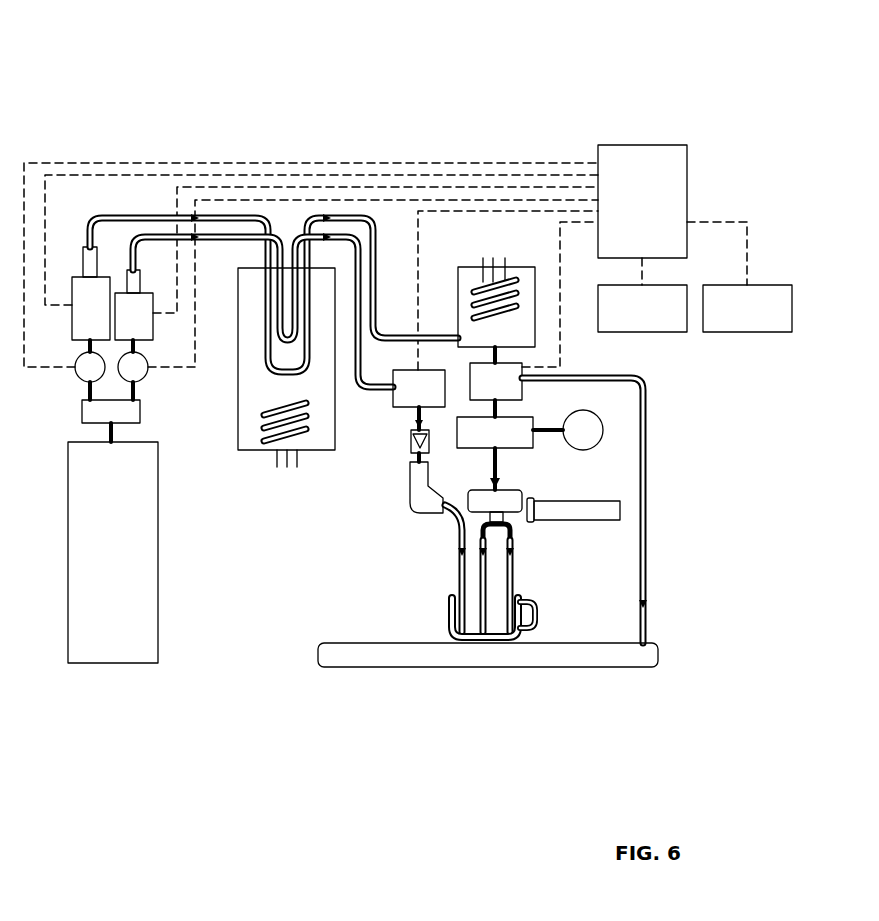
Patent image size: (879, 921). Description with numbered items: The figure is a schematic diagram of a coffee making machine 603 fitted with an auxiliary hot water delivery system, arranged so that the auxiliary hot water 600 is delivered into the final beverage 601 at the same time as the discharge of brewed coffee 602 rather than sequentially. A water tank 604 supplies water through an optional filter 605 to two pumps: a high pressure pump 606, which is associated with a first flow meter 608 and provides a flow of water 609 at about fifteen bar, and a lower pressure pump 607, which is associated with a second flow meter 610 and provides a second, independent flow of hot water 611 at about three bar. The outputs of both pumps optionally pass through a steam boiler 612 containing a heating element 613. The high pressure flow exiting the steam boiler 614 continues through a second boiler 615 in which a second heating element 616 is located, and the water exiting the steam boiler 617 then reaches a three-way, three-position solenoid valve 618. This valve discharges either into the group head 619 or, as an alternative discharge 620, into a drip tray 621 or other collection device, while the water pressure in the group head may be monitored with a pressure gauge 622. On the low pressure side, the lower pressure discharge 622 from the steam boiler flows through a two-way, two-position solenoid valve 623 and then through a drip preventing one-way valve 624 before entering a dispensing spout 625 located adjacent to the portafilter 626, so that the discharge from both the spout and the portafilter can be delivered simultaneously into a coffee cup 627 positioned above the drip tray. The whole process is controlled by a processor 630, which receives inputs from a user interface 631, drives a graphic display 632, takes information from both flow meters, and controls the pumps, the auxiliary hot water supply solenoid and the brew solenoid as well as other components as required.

The auxiliary hot water 600 is at (458, 532).
The final beverage 601 is at (448, 605).
The brewed coffee 602 is at (508, 573).
The coffee making machine 603 is at (632, 80).
The water tank 604 is at (145, 538).
The filter 605 is at (130, 413).
The high pressure pump 606 is at (80, 293).
The lower pressure pump 607 is at (138, 303).
The first flow meter 608 is at (88, 369).
The flow of water 609 is at (130, 215).
The second flow meter 610 is at (143, 370).
The second flow of hot water 611 is at (250, 233).
The steam boiler 612 is at (337, 415).
The heating element 613 is at (310, 440).
The high pressure flow exiting the steam boiler 614 is at (378, 250).
The second boiler 615 is at (525, 273).
The second heating element 616 is at (475, 290).
The water exiting the steam boiler 617 is at (498, 352).
The three-way, three-position solenoid valve 618 is at (520, 390).
The group head 619 is at (518, 440).
The discharge 620 is at (645, 550).
The drip tray 621 is at (660, 650).
The lower pressure discharge 622 is at (345, 232).
The two-way, two-position solenoid valve 623 is at (393, 405).
The drip preventing one-way valve 624 is at (412, 455).
The dispensing spout 625 is at (424, 500).
The portafilter 626 is at (512, 520).
The coffee cup 627 is at (527, 633).
The processor 630 is at (667, 163).
The user interface 631 is at (667, 297).
The graphic display 632 is at (763, 297).